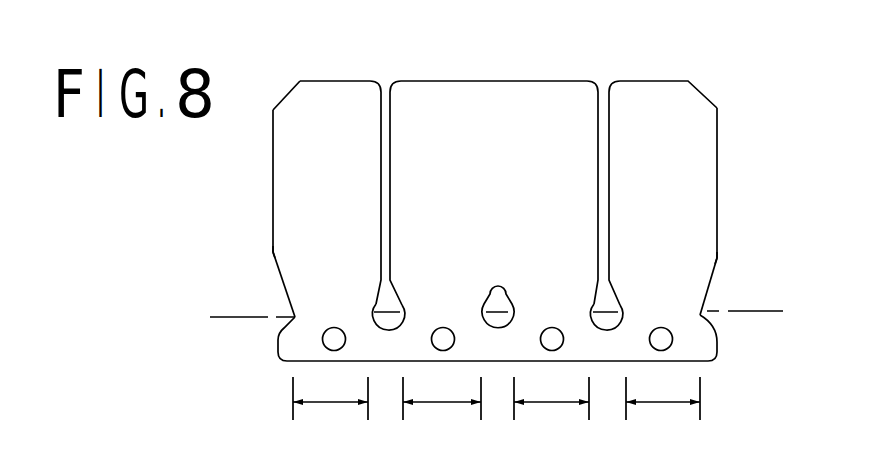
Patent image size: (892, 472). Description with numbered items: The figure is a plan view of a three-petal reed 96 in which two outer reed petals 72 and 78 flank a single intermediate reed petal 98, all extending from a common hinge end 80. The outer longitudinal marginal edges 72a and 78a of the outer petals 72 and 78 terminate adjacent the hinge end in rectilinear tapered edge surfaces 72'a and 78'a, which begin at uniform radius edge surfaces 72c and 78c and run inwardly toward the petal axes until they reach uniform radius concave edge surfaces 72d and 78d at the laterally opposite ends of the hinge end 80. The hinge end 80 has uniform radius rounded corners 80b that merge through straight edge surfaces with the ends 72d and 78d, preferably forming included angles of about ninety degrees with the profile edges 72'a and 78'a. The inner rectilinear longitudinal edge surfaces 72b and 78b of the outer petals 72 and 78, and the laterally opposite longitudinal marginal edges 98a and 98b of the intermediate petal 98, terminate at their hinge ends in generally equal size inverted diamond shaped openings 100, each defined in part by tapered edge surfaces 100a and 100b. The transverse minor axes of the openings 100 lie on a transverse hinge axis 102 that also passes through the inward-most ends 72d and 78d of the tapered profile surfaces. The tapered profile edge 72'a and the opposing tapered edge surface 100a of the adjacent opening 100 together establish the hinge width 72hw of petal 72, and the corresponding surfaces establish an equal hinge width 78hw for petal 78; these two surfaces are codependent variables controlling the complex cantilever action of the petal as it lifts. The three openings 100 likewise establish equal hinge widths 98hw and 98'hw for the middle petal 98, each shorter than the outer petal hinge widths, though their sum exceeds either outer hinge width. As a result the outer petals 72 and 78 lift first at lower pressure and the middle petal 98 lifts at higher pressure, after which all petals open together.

The outer reed petal 72 is at (340, 58).
The outer longitudinal marginal edge 72a is at (273, 180).
The inner rectilinear longitudinal edge surface 72b is at (382, 92).
The uniform radius edge surface 72c is at (273, 252).
The tapered edge surface 72'a is at (243, 284).
The uniform radius concave edge surface 72d is at (283, 330).
The hinge width 72hw is at (330, 404).
The outer reed petal 78 is at (682, 71).
The outer longitudinal marginal edge 78a is at (717, 128).
The inner rectilinear longitudinal edge surface 78b is at (606, 98).
The uniform radius edge surface 78c is at (717, 258).
The tapered edge surface 78'a is at (753, 286).
The uniform radius concave edge surface 78d is at (704, 320).
The hinge width 78hw is at (670, 404).
The hinge end 80 is at (362, 362).
The rounded corner 80b is at (280, 360).
The reed 96 is at (276, 90).
The intermediate reed petal 98 is at (499, 64).
The longitudinal marginal edge 98a is at (393, 92).
The longitudinal marginal edge 98b is at (602, 100).
The hinge width 98hw is at (440, 404).
The hinge width 98'hw is at (562, 416).
The diamond shaped opening 100 is at (492, 328).
The tapered edge surface 100a is at (380, 304).
The tapered edge surface 100b is at (402, 323).
The transverse hinge axis 102 is at (236, 319).